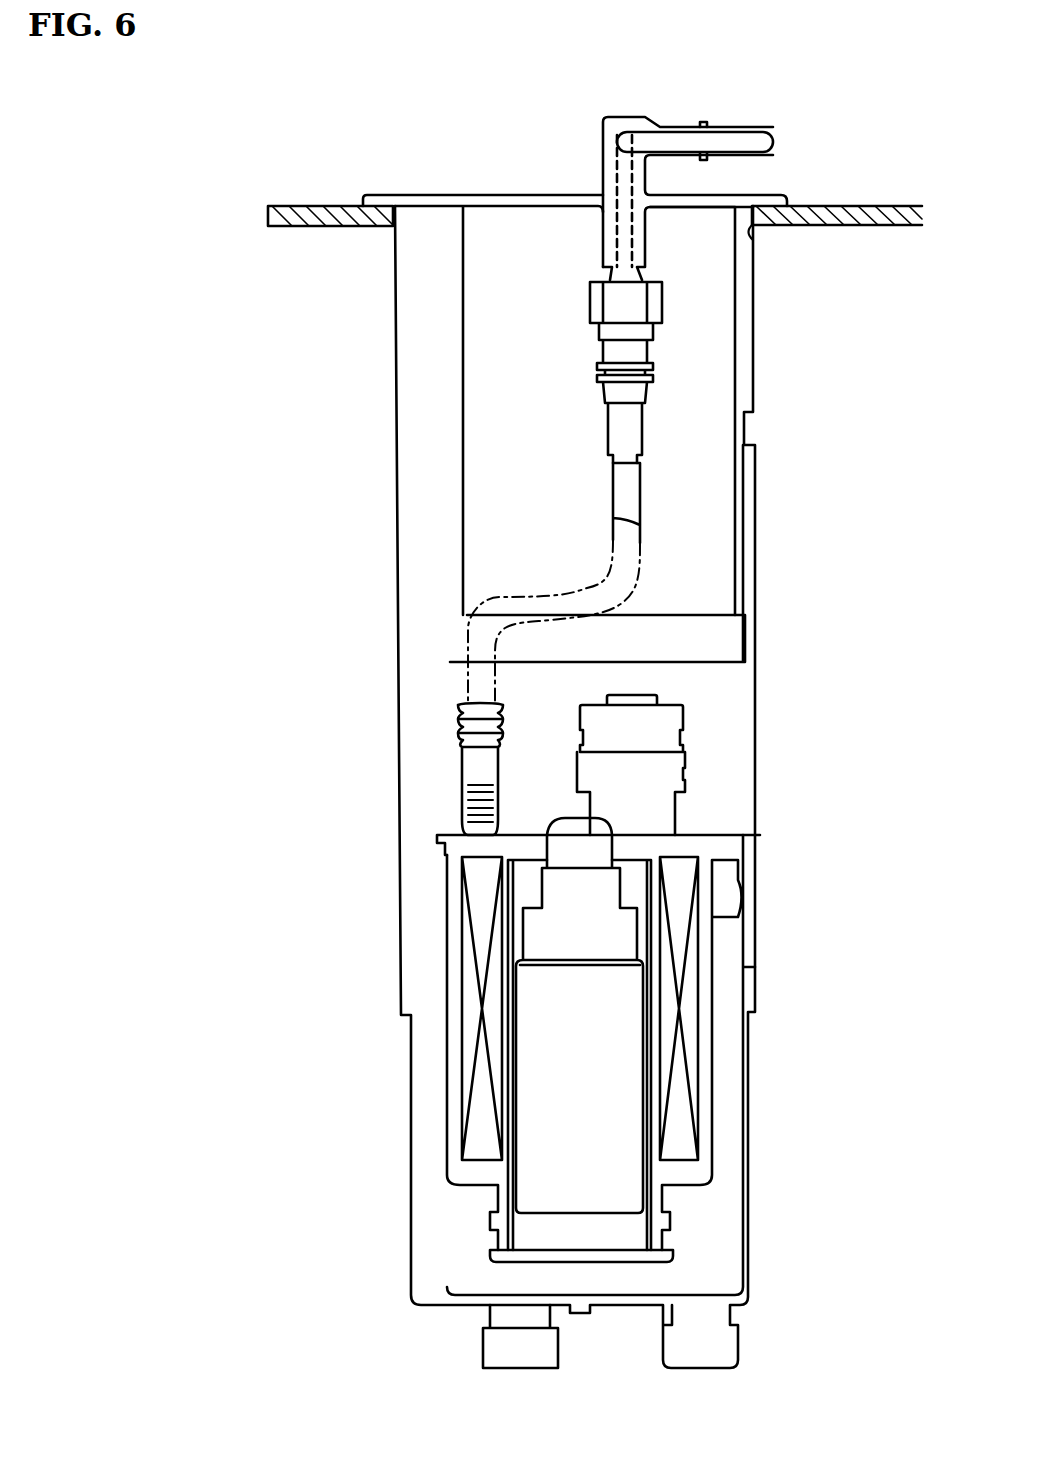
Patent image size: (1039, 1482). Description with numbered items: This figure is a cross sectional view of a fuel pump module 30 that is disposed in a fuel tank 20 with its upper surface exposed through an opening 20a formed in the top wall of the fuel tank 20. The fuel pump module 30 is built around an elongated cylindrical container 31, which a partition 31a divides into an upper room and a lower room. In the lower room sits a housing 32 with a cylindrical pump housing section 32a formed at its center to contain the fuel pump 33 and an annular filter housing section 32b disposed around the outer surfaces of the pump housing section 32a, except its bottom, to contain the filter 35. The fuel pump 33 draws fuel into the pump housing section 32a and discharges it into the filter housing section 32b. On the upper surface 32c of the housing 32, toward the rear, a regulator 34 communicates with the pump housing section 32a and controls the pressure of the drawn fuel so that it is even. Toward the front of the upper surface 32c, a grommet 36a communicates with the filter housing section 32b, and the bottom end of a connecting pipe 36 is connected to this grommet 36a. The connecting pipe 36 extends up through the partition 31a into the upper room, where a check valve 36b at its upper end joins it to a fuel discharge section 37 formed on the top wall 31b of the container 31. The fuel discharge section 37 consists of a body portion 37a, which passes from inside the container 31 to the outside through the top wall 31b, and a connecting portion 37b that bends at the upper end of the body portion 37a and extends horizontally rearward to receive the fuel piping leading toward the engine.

The fuel tank 20 is at (885, 206).
The opening 20a is at (755, 236).
The fuel pump module 30 is at (803, 316).
The container 31 is at (755, 404).
The partition 31a is at (670, 615).
The top wall 31b is at (437, 195).
The housing 32 is at (655, 1052).
The pump housing section 32a is at (660, 1195).
The filter housing section 32b is at (713, 1156).
The upper surface 32c is at (685, 835).
The fuel pump 33 is at (643, 1103).
The regulator 34 is at (683, 742).
The filter 35 is at (698, 1002).
The connecting pipe 36 is at (581, 558).
The grommet 36a is at (503, 750).
The check valve 36b is at (590, 304).
The fuel discharge section 37 is at (733, 188).
The body portion 37a is at (645, 177).
The connecting portion 37b is at (753, 127).